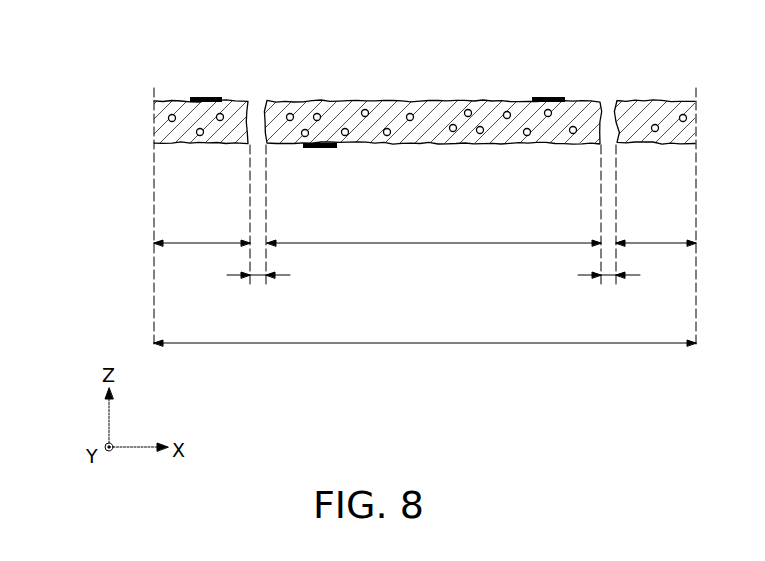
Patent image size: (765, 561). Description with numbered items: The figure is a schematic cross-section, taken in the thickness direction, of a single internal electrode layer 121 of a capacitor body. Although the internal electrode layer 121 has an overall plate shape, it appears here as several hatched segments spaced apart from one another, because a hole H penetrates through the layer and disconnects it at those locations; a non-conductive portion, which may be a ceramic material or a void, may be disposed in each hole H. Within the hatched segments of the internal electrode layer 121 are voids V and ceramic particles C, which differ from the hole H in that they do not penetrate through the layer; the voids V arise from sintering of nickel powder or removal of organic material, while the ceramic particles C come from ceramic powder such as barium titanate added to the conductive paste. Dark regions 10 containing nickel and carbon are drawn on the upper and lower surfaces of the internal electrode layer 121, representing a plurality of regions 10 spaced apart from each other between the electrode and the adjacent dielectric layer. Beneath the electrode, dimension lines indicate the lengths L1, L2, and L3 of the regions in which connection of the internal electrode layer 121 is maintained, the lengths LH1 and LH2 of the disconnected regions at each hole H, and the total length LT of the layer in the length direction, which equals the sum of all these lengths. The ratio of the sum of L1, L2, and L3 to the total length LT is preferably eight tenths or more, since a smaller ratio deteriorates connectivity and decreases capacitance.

The internal electrode layer 121 is at (136, 123).
The region containing nickel and carbon 10 is at (548, 97).
The hole H is at (263, 123).
The void V is at (317, 113).
The ceramic particle C is at (410, 113).
The length of a region in which connection is maintained L1 is at (202, 228).
The length of a region in which connection is maintained L2 is at (434, 228).
The length of a region in which connection is maintained L3 is at (656, 228).
The length of a region in which the internal electrode layer is disconnected LH1 is at (258, 293).
The length of a region in which the internal electrode layer is disconnected LH2 is at (609, 293).
The total length of the internal electrode layer LT is at (425, 358).